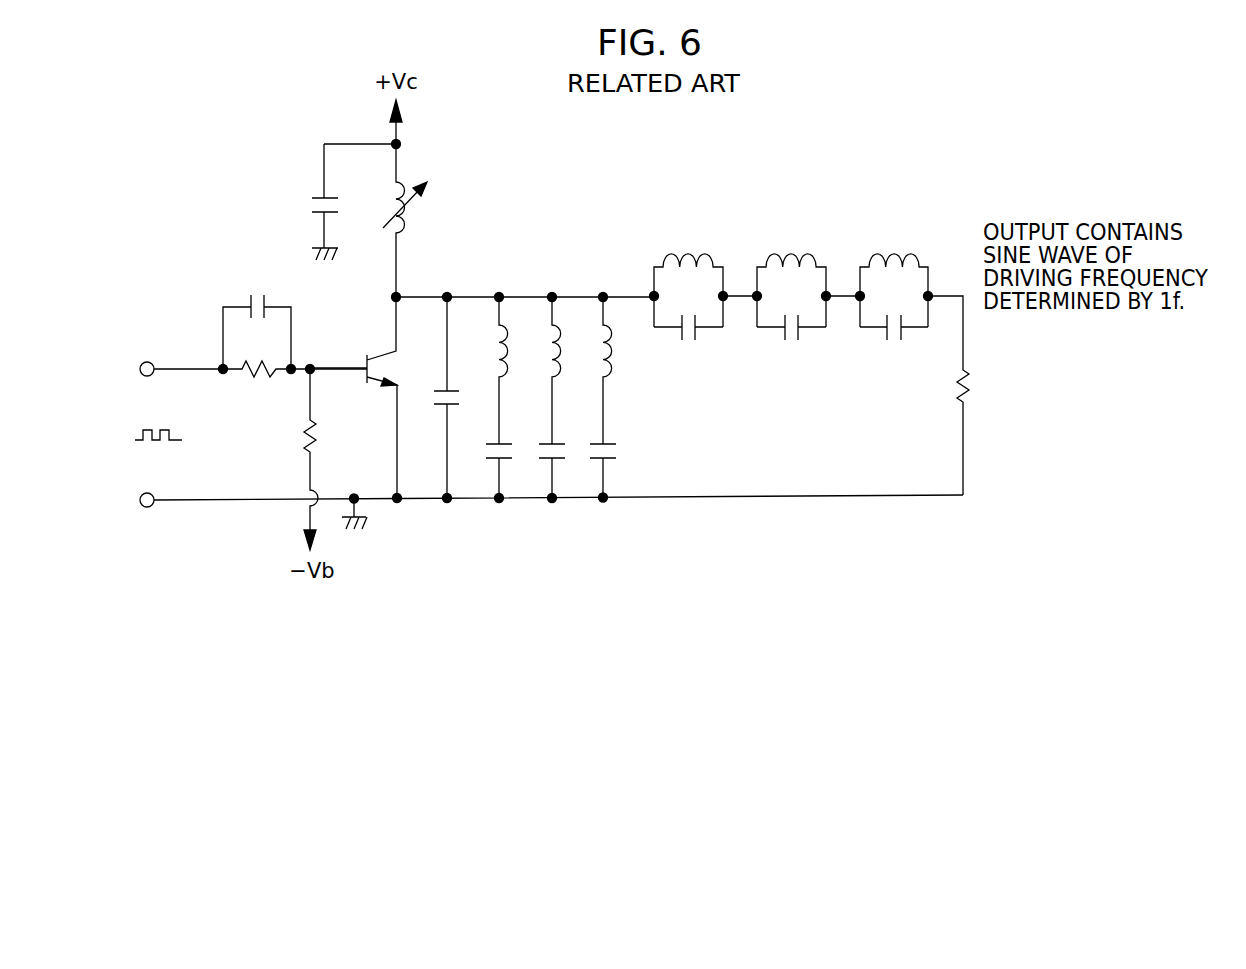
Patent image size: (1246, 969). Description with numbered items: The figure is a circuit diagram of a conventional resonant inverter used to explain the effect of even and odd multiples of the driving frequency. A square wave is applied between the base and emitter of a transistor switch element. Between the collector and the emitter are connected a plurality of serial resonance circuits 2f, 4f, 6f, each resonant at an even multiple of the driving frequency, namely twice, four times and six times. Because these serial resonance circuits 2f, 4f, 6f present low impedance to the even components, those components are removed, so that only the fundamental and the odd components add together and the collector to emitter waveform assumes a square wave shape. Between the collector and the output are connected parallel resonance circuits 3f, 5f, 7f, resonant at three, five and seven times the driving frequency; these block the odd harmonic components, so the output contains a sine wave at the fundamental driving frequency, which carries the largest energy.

The serial resonance circuit 2f is at (499, 518).
The serial resonance circuit 4f is at (551, 518).
The serial resonance circuit 6f is at (603, 518).
The parallel resonance circuit 3f is at (688, 226).
The parallel resonance circuit 5f is at (794, 226).
The parallel resonance circuit 7f is at (899, 226).